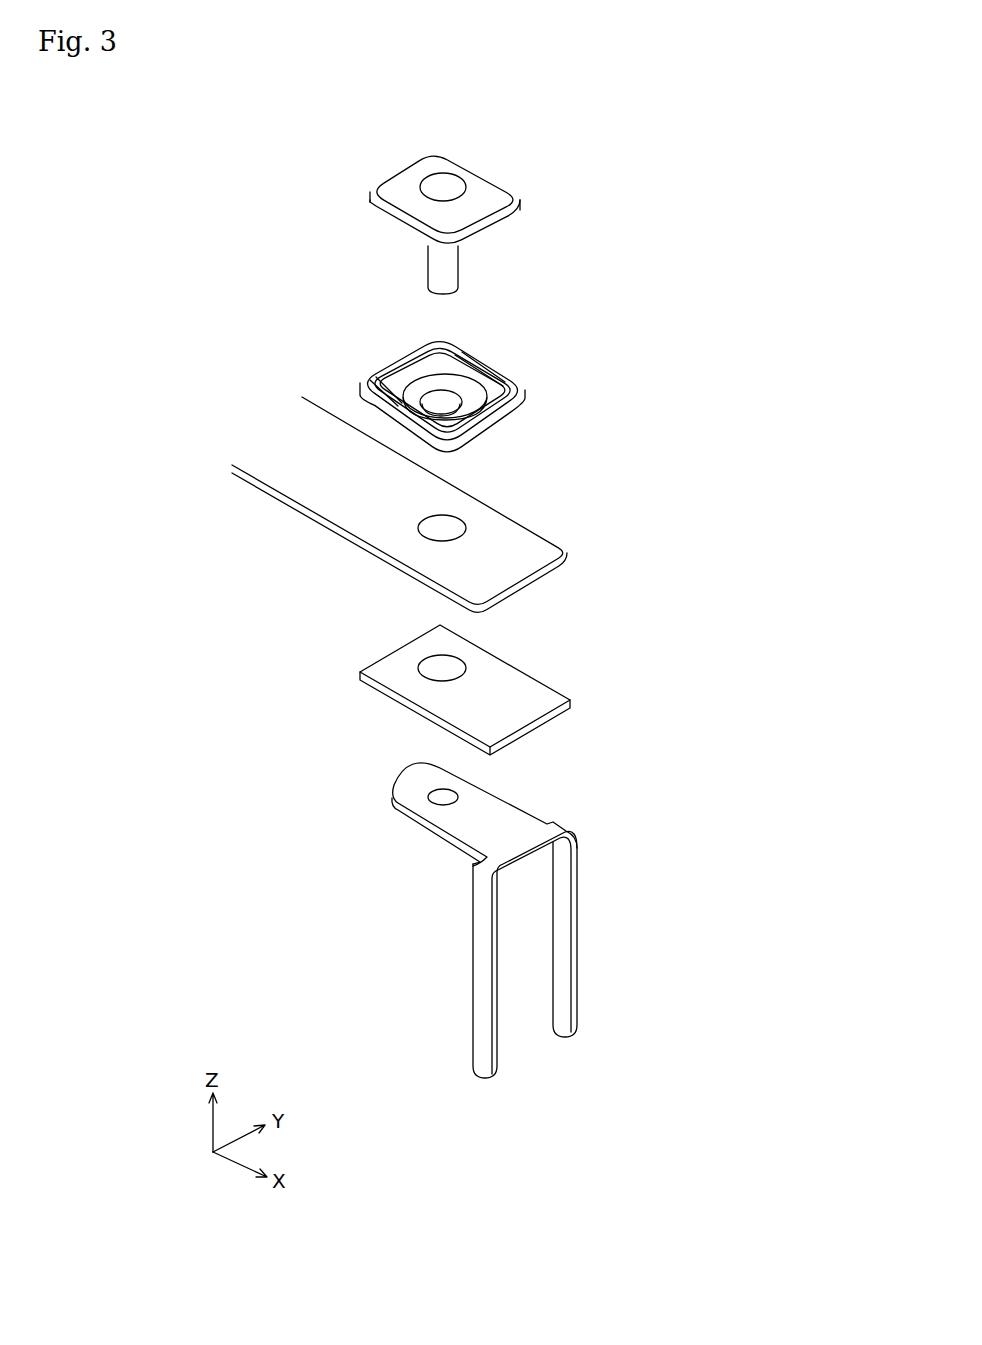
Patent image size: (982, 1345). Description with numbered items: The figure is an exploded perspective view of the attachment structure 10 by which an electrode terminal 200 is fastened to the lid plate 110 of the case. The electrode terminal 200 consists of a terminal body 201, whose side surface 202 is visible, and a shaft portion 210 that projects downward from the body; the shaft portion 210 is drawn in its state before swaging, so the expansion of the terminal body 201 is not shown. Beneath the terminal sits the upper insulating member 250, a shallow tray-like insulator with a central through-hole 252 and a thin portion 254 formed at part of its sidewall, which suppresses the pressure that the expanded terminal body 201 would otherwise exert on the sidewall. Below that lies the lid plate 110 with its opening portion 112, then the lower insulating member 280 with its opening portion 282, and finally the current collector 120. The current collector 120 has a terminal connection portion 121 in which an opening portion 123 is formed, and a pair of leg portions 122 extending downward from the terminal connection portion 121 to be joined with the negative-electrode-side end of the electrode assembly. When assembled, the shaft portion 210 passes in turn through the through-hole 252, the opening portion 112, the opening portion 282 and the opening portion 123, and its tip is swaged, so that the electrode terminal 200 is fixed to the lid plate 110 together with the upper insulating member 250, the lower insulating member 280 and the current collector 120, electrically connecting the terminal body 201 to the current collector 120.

The terminal connection structure 10 is at (657, 142).
The electrode terminal 200 is at (603, 148).
The terminal body 201 is at (485, 187).
The head side surface 202 is at (390, 211).
The shaft portion 210 is at (450, 263).
The upper insulating member 250 is at (490, 369).
The through-hole 252 is at (442, 403).
The thin portion 254 is at (398, 408).
The lid plate 110 is at (443, 504).
The opening portion 112 is at (443, 526).
The lower insulating member 280 is at (505, 690).
The opening portion 282 is at (443, 667).
The current collector 120 is at (629, 789).
The terminal connection portion 121 is at (448, 824).
The leg portions 122 is at (482, 960).
The opening portion 123 is at (443, 797).